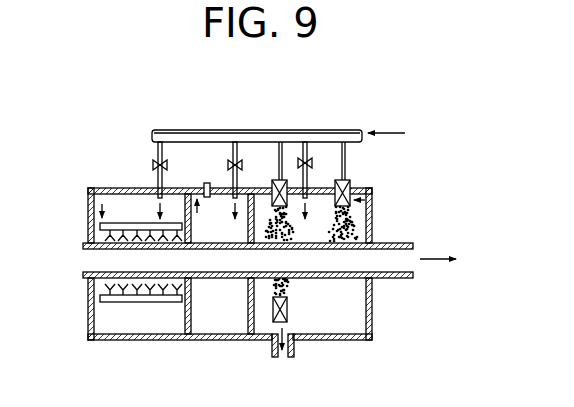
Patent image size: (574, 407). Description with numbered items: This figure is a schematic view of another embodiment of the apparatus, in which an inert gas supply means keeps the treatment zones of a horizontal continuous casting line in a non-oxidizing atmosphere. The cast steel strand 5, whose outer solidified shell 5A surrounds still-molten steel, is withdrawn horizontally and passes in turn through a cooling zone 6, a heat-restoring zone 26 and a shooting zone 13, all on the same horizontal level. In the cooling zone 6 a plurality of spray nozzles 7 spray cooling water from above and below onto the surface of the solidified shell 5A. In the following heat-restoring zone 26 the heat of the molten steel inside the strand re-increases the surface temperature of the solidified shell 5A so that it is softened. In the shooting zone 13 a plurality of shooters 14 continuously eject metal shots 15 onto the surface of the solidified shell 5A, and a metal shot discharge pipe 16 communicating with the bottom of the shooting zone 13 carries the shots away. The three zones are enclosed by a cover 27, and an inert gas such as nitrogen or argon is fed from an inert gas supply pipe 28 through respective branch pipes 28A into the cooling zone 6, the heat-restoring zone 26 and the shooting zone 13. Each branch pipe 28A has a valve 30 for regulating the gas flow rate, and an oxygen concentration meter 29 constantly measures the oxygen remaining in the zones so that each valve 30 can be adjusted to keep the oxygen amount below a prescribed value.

The cast steel strand 5 is at (410, 236).
The solidified shell 5A is at (413, 248).
The cooling zone 6 is at (102, 188).
The spray nozzles 7 is at (128, 223).
The shooting zone 13 is at (372, 198).
The shooters 14 is at (285, 178).
The metal shots 15 is at (292, 230).
The metal shot discharge pipe 16 is at (295, 345).
The heat-restoring zone 26 is at (197, 198).
The cover 27 is at (116, 188).
The inert gas supply pipe 28 is at (270, 130).
The branch pipes 28A is at (165, 142).
The oxygen concentration meter 29 is at (207, 183).
The valve 30 is at (157, 161).